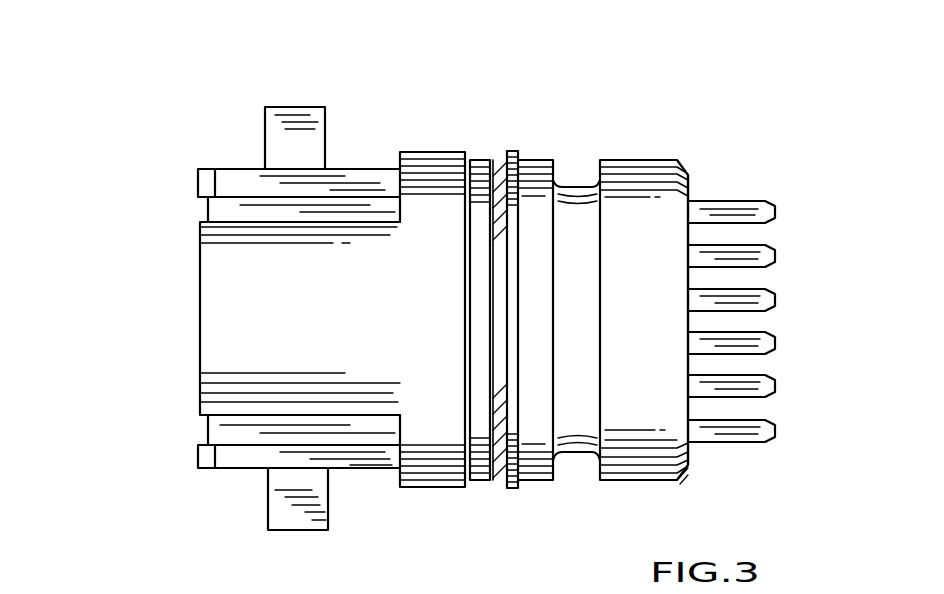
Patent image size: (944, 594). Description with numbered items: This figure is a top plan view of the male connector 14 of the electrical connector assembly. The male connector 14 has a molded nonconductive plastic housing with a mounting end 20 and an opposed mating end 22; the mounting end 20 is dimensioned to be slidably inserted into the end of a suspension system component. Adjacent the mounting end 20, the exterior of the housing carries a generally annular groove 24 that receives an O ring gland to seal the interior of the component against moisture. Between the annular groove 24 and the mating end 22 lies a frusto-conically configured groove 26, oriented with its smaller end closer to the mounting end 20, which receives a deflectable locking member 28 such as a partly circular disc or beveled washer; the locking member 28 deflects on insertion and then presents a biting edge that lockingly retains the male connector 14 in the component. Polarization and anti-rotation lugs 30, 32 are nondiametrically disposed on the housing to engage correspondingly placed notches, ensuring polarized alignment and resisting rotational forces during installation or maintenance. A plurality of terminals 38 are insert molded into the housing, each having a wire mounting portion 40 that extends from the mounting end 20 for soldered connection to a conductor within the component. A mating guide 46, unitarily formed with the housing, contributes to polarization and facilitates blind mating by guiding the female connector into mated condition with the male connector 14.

The male connector 14 is at (112, 150).
The mounting end 20 is at (690, 192).
The mating end 22 is at (198, 185).
The annular groove 24 is at (597, 180).
The frusto-conically configured groove 26 is at (503, 172).
The locking member 28 is at (513, 152).
The polarization and anti-rotation lug 30 is at (285, 530).
The polarization and anti-rotation lug 32 is at (293, 107).
The terminal 38 is at (790, 240).
The wire mounting portion 40 is at (770, 268).
The mating guide 46 is at (218, 309).